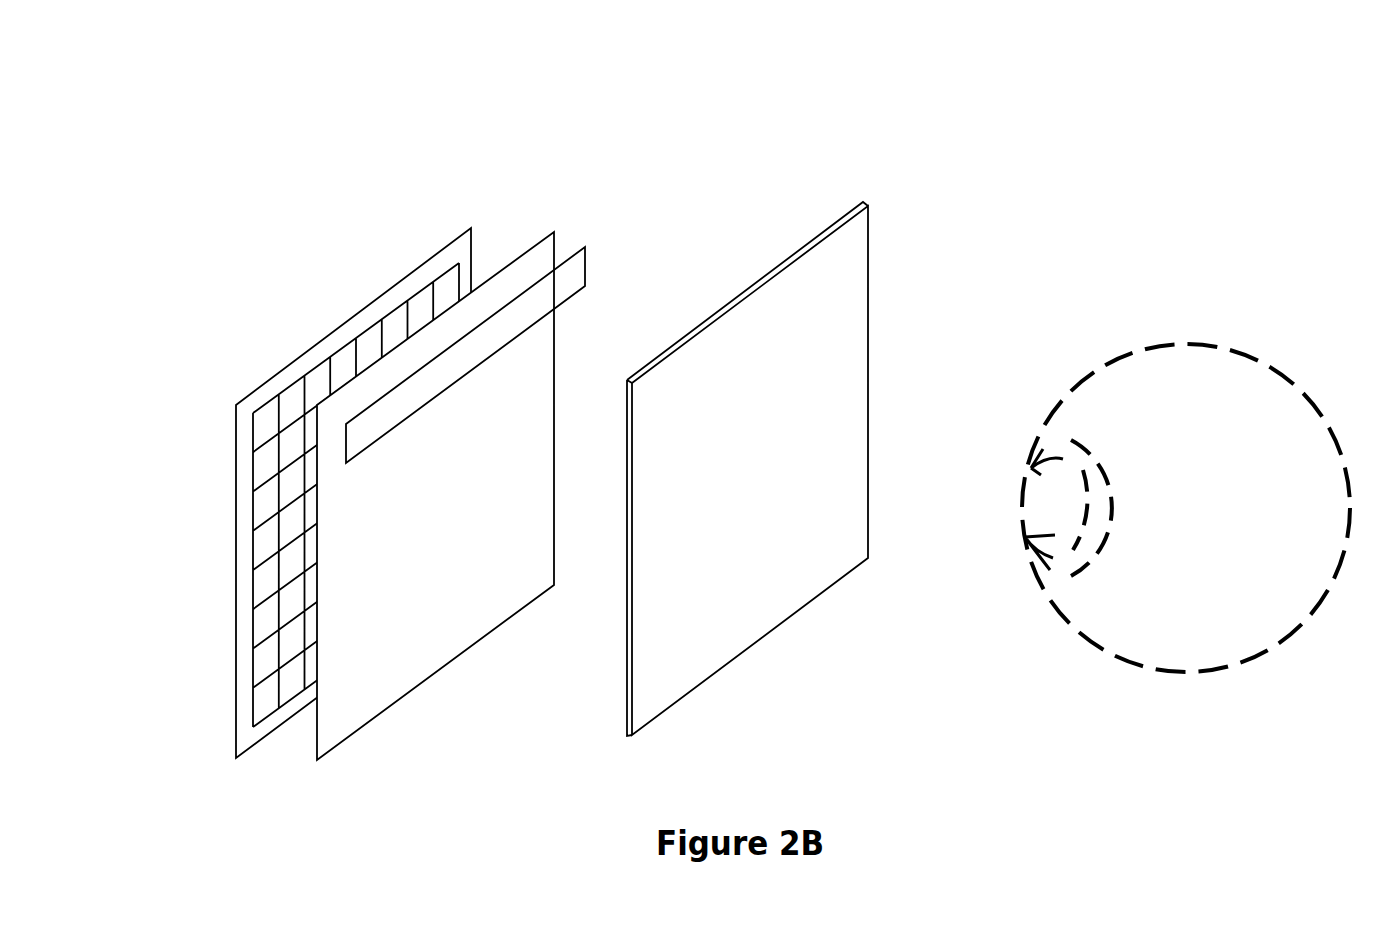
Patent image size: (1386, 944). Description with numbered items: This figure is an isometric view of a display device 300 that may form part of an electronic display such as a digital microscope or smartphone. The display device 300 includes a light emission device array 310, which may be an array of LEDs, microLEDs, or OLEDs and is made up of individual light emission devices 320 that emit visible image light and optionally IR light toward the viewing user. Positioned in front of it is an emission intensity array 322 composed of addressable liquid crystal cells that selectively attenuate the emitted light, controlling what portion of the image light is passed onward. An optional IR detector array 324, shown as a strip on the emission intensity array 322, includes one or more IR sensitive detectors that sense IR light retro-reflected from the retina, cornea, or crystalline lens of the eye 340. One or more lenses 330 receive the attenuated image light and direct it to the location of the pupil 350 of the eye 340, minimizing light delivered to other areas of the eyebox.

The display device 300 is at (191, 47).
The light emission device array 310 is at (236, 552).
The light emission devices 320 is at (365, 330).
The emission intensity array 322 is at (541, 237).
The IR detector array 324 is at (578, 247).
The one or more lenses 330 is at (797, 252).
The eye 340 is at (1187, 347).
The pupil 350 is at (1028, 535).